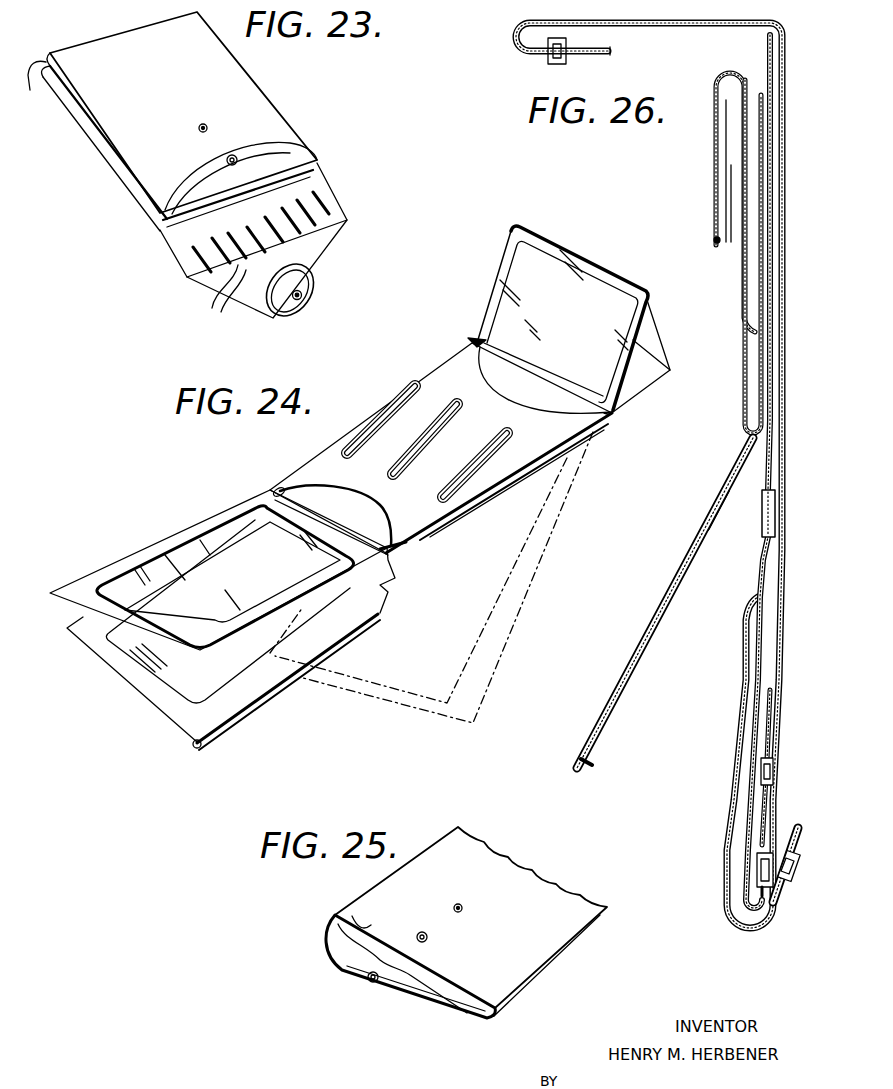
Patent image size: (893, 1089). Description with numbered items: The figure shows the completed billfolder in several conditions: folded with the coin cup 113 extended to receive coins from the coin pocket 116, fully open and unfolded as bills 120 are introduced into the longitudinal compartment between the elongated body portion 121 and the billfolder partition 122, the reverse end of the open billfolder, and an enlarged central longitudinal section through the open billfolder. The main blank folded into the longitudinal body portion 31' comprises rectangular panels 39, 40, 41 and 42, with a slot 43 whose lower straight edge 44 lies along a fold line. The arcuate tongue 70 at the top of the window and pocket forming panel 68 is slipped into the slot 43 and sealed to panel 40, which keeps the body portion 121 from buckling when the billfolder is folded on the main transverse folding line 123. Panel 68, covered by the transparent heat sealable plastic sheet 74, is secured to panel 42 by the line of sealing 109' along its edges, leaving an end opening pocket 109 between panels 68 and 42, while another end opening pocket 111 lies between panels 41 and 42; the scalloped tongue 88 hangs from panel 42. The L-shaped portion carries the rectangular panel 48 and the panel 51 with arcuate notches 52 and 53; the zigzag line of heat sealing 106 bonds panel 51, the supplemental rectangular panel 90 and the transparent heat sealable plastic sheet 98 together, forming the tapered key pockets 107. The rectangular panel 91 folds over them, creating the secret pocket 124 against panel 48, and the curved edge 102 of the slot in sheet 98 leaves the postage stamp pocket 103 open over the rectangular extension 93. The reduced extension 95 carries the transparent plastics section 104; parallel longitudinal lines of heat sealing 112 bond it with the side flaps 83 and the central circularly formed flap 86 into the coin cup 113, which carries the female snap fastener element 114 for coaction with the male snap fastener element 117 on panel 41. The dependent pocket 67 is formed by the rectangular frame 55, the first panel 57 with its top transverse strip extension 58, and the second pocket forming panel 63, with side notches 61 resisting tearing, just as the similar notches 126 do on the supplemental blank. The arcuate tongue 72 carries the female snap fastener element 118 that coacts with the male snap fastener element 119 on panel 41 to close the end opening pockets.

In FIG. 24, the longitudinal body portion 31' is at (459, 572).
In FIG. 26, the longitudinal body portion 31' is at (729, 256).
In FIG. 26, the rectangular panel 39 is at (790, 45).
In FIG. 26, the rectangular panel 40 is at (744, 337).
In FIG. 23, the rectangular panel 41 is at (183, 119).
In FIG. 25, the rectangular panel 41 is at (471, 921).
In FIG. 26, the rectangular panel 41 is at (772, 692).
In FIG. 26, the rectangular panel 42 is at (750, 757).
In FIG. 26, the slot 43 is at (762, 545).
In FIG. 26, the lower straight edge 44 is at (779, 548).
In FIG. 26, the rectangular panel 48 is at (766, 283).
In FIG. 24, the panel 51 is at (441, 448).
In FIG. 26, the panel 51 is at (735, 247).
In FIG. 24, the arcuate notch 52 is at (469, 347).
In FIG. 24, the arcuate notch 53 is at (358, 502).
In FIG. 24, the rectangular frame 55 is at (133, 556).
In FIG. 26, the rectangular frame 55 is at (592, 752).
In FIG. 26, the first panel 57 is at (650, 642).
In FIG. 26, the top transverse strip extension 58 is at (742, 472).
In FIG. 24, the side notches 61 is at (284, 486).
In FIG. 24, the second pocket forming panel 63 is at (225, 577).
In FIG. 26, the second pocket forming panel 63 is at (662, 600).
In FIG. 24, the pocket 67 is at (240, 615).
In FIG. 26, the pocket 67 is at (588, 719).
In FIG. 24, the window and pocket forming panel 68 is at (205, 732).
In FIG. 26, the window and pocket forming panel 68 is at (724, 870).
In FIG. 24, the arcuate tongue 70 is at (366, 590).
In FIG. 26, the arcuate tongue 70 is at (762, 520).
In FIG. 23, the arcuate tongue 72 is at (286, 152).
In FIG. 25, the arcuate tongue 72 is at (412, 1002).
In FIG. 26, the arcuate tongue 72 is at (797, 840).
In FIG. 24, the transparent heat sealable plastic sheet 74 is at (208, 631).
In FIG. 26, the transparent heat sealable plastic sheet 74 is at (734, 786).
In FIG. 26, the side flaps 83 is at (575, 57).
In FIG. 23, the central circularly formed flap 86 is at (282, 300).
In FIG. 26, the central circularly formed flap 86 is at (606, 56).
In FIG. 25, the scalloped tongue 88 is at (452, 1003).
In FIG. 26, the scalloped tongue 88 is at (754, 930).
In FIG. 26, the rectangular panel 90 is at (738, 170).
In FIG. 26, the rectangular panel 91 is at (758, 206).
In FIG. 26, the rectangular extension 93 is at (713, 150).
In FIG. 23, the reduced extension 95 is at (276, 246).
In FIG. 26, the reduced extension 95 is at (626, 30).
In FIG. 24, the transparent heat sealable plastic sheet 98 is at (545, 378).
In FIG. 26, the transparent heat sealable plastic sheet 98 is at (740, 130).
In FIG. 24, the curved edge 102 is at (522, 347).
In FIG. 26, the curved edge 102 is at (713, 100).
In FIG. 24, the postage stamp pocket 103 is at (527, 255).
In FIG. 26, the postage stamp pocket 103 is at (706, 198).
In FIG. 26, the transparent plastics section 104 is at (670, 30).
In FIG. 24, the zigzag line of heat sealing 106 is at (406, 422).
In FIG. 26, the zigzag line of heat sealing 106 is at (742, 312).
In FIG. 26, the key pockets 107 is at (716, 236).
In FIG. 26, the end opening pocket 109 is at (705, 813).
In FIG. 24, the line of sealing 109' is at (288, 682).
In FIG. 25, the end opening pocket 111 is at (355, 920).
In FIG. 26, the end opening pocket 111 is at (758, 724).
In FIG. 23, the longitudinal lines of heat sealing 112 is at (222, 294).
In FIG. 23, the coin cup 113 is at (324, 258).
In FIG. 24, the coin cup 113 is at (672, 352).
In FIG. 26, the coin cup 113 is at (514, 60).
In FIG. 23, the female snap fastener element 114 is at (303, 299).
In FIG. 26, the female snap fastener element 114 is at (556, 63).
In FIG. 26, the coin pocket 116 is at (760, 262).
In FIG. 23, the male snap fastener element 117 is at (207, 125).
In FIG. 25, the male snap fastener element 117 is at (464, 908).
In FIG. 26, the male snap fastener element 117 is at (773, 766).
In FIG. 23, the female snap fastener element 118 is at (236, 155).
In FIG. 25, the female snap fastener element 118 is at (371, 982).
In FIG. 26, the female snap fastener element 118 is at (794, 884).
In FIG. 25, the male snap fastener element 119 is at (420, 930).
In FIG. 26, the male snap fastener element 119 is at (775, 858).
In FIG. 24, the bills 120 is at (525, 612).
In FIG. 23, the elongated body portion 121 is at (92, 157).
In FIG. 24, the elongated body portion 121 is at (486, 532).
In FIG. 25, the elongated body portion 121 is at (538, 967).
In FIG. 26, the elongated body portion 121 is at (758, 698).
In FIG. 23, the billfolder partition 122 is at (136, 200).
In FIG. 24, the billfolder partition 122 is at (420, 538).
In FIG. 26, the billfolder partition 122 is at (742, 443).
In FIG. 23, the main transverse folding line 123 is at (32, 87).
In FIG. 26, the secret pocket 124 is at (758, 378).
In FIG. 24, the notches 126 is at (470, 342).